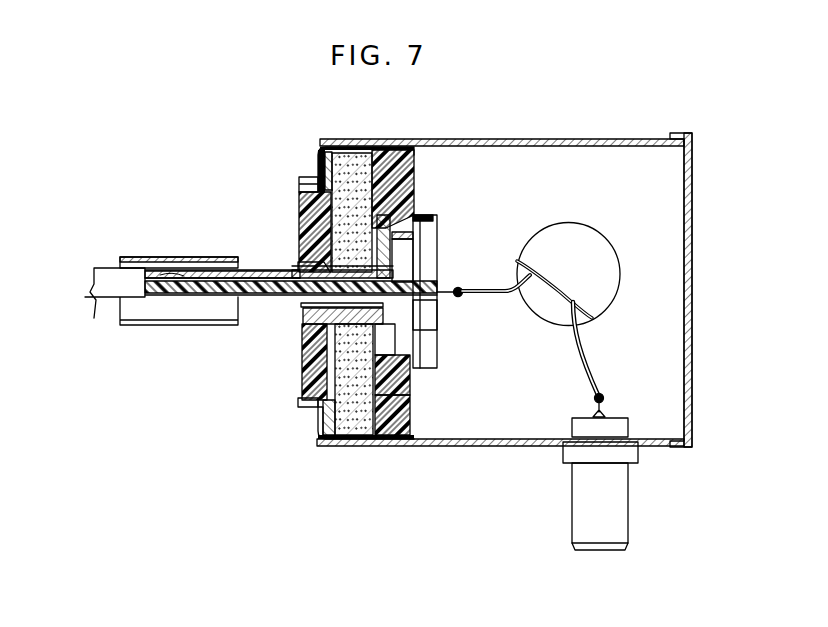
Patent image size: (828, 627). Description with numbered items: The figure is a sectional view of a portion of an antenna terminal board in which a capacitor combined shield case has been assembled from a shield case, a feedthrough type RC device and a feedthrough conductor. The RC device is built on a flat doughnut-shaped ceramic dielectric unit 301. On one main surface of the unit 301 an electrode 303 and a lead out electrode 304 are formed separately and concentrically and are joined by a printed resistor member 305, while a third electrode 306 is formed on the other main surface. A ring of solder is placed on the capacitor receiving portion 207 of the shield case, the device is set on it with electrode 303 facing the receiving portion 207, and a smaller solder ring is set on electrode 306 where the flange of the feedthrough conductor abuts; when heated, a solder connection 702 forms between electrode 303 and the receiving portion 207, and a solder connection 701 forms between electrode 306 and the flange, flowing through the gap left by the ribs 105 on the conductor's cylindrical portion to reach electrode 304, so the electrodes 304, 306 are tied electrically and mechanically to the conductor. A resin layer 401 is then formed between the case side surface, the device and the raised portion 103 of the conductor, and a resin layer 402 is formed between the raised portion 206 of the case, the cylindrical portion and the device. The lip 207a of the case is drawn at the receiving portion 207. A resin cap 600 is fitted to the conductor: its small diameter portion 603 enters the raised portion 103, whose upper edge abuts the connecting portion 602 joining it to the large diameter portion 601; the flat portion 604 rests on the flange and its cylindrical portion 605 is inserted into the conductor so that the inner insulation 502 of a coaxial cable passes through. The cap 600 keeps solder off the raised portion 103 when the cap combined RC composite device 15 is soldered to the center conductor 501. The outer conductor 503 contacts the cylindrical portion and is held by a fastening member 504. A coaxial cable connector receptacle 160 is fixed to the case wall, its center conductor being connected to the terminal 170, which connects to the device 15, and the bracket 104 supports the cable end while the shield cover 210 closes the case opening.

The cap combined RC composite device 15 is at (593, 237).
The raised portion 103 is at (398, 212).
The bracket 104 is at (430, 350).
The rib 105 is at (303, 305).
The coaxial cable connector receptacle 160 is at (622, 490).
The terminal 170 is at (604, 402).
The raised portion 206 is at (310, 182).
The capacitor receiving portion 207 is at (303, 143).
The casing lip 207a is at (316, 168).
The shield cover 210 is at (693, 286).
The dielectric unit 301 is at (360, 428).
The electrode 303 is at (318, 416).
The electrode 304 is at (334, 241).
The resistor member 305 is at (306, 365).
The third electrode 306 is at (386, 381).
The resin layer 401 is at (402, 415).
The resin layer 402 is at (306, 400).
The center conductor 501 is at (449, 297).
The inner insulation 502 is at (430, 320).
The outer conductor 503 is at (172, 279).
The fastening member 504 is at (186, 257).
The cap 600 is at (512, 193).
The large diameter portion 601 is at (420, 222).
The connecting portion 602 is at (414, 236).
The small diameter portion 603 is at (400, 252).
The flat portion 604 is at (398, 273).
The cylindrical portion 605 is at (322, 270).
The solder connection 701 is at (306, 335).
The solder connection 702 is at (308, 210).